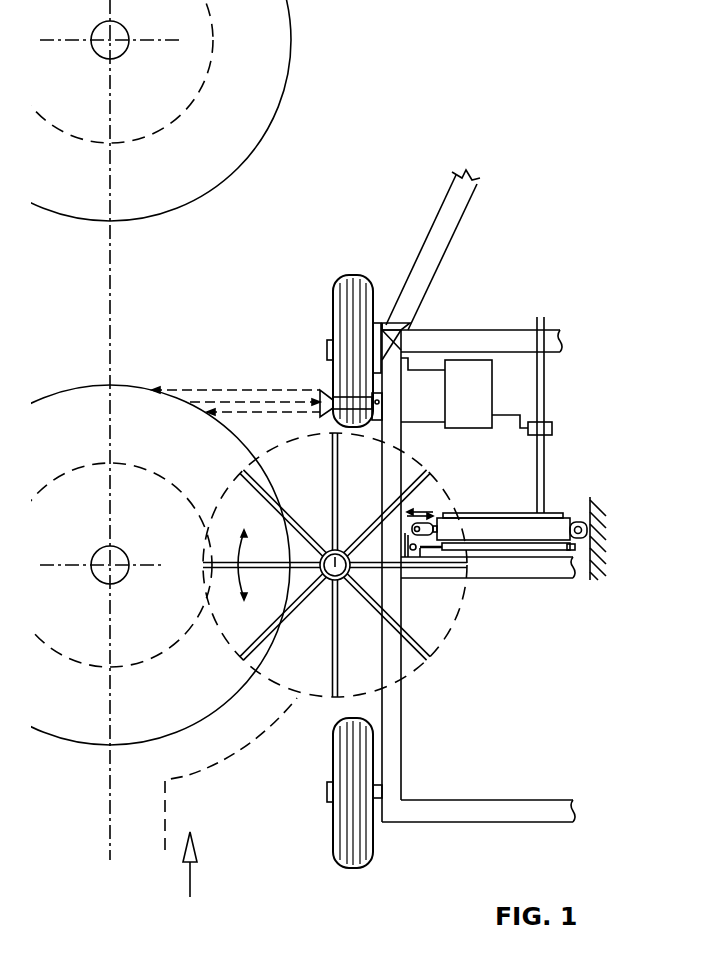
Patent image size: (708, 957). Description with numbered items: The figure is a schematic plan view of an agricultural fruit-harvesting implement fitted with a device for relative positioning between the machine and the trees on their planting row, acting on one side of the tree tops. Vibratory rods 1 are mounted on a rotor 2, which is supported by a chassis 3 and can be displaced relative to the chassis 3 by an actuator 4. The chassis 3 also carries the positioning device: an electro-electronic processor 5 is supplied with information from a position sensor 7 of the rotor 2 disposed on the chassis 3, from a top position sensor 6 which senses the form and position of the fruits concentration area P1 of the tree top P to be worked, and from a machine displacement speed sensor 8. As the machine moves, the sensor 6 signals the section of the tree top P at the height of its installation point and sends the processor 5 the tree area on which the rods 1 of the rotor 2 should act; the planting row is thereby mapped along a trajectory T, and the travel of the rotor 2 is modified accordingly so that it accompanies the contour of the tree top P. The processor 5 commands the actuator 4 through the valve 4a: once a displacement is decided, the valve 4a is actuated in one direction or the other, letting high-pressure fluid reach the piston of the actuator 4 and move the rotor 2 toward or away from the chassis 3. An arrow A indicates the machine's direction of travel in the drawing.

The vibratory rods 1 is at (430, 655).
The rotor 2 is at (350, 572).
The chassis 3 is at (392, 757).
The actuator 4 is at (543, 530).
The valve 4a is at (541, 428).
The electro-electronic processor 5 is at (470, 386).
The top position sensor 6 is at (322, 393).
The position sensor of the rotor 7 is at (533, 547).
The machine displacement speed sensor 8 is at (383, 355).
The tree top P is at (292, 55).
The fruits concentration area P1 is at (235, 121).
The trajectory T is at (188, 775).
The direction of travel A is at (197, 868).